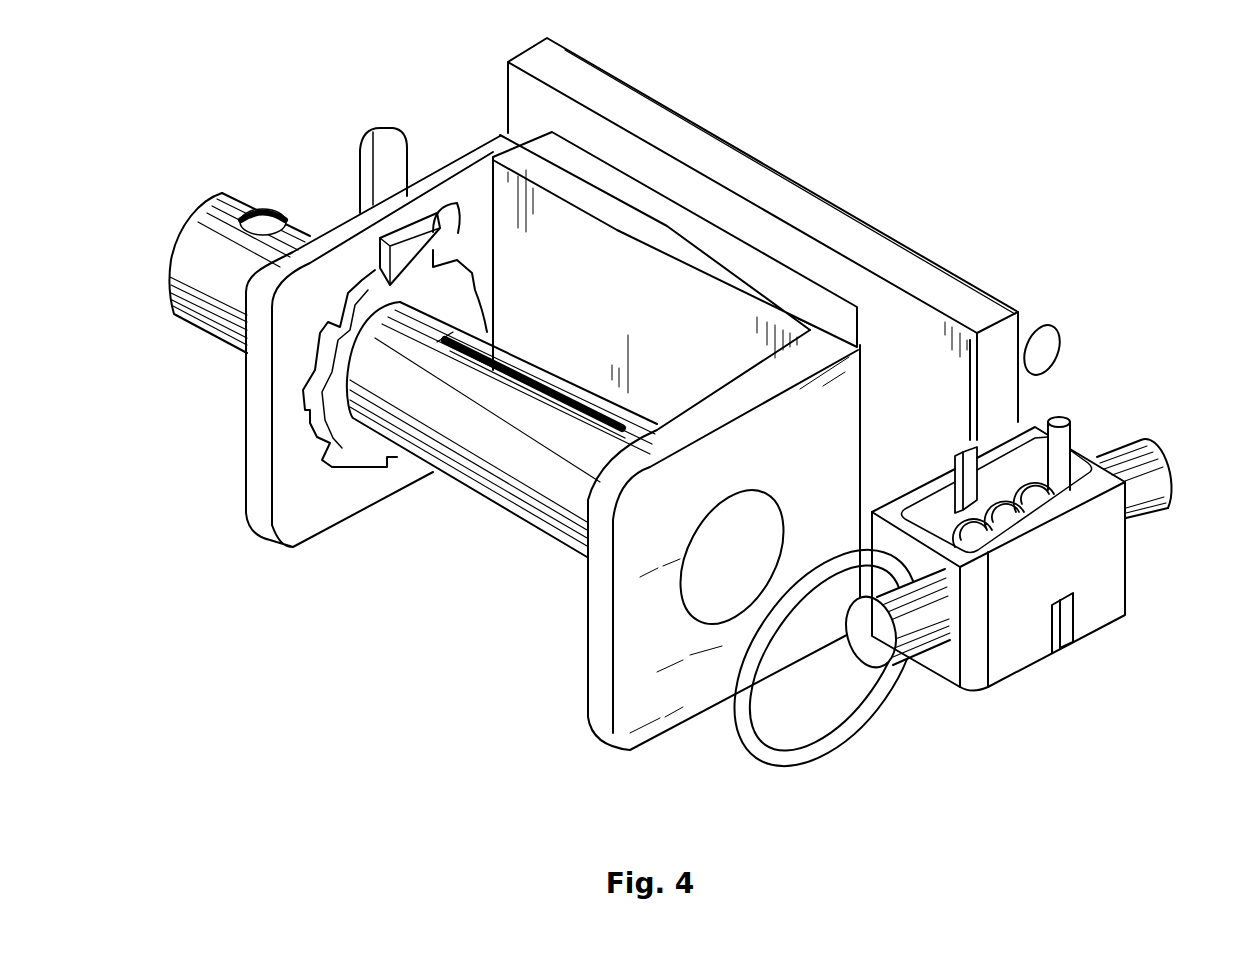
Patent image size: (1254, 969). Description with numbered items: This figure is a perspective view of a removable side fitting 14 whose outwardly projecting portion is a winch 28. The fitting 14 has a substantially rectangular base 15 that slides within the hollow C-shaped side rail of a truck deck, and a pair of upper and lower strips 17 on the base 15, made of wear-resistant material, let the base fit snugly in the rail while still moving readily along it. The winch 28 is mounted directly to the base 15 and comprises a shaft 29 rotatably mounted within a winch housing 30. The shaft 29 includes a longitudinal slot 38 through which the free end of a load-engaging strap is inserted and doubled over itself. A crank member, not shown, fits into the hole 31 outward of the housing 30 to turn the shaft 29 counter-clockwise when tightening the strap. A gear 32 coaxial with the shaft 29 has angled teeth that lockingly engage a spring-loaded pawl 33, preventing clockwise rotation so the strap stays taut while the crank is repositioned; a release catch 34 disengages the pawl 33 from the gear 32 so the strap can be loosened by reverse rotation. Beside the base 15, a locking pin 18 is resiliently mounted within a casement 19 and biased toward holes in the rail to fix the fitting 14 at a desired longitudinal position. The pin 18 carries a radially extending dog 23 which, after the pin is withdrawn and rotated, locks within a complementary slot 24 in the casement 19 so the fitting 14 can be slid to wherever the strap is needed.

The removable fitting 14 is at (814, 231).
The base 15 is at (907, 260).
The upper and lower strips 17 is at (1047, 350).
The pin 18 is at (1165, 473).
The casement 19 is at (1038, 543).
The dog 23 is at (1065, 443).
The slot 24 is at (955, 467).
The winch 28 is at (437, 605).
The shaft 29 is at (216, 251).
The winch housing 30 is at (692, 697).
The hole 31 is at (265, 200).
The gear 32 is at (353, 457).
The spring-loaded pawl 33 is at (437, 232).
The release catch 34 is at (380, 150).
The longitudinal slot 38 is at (495, 345).